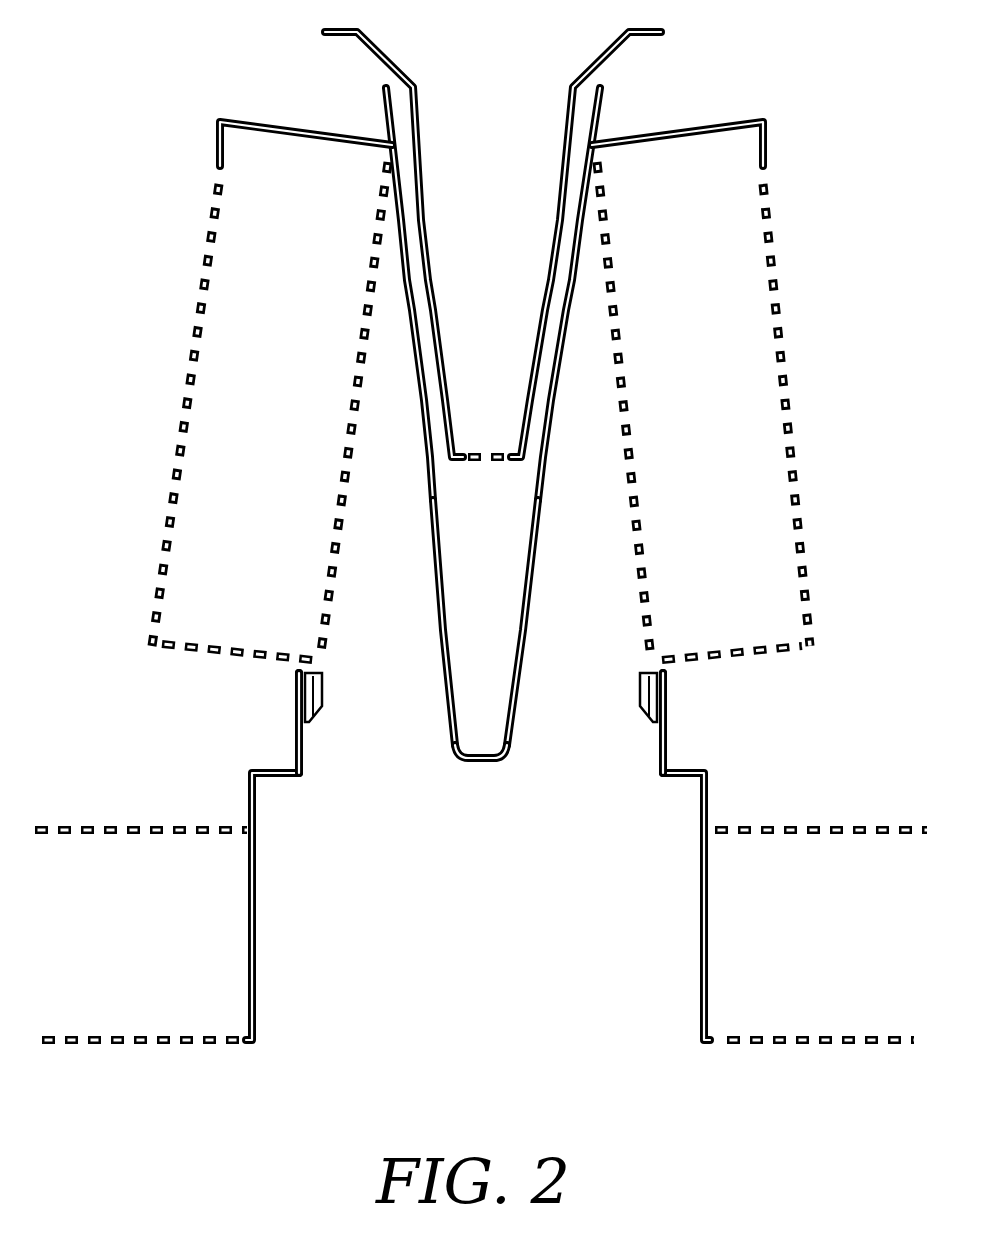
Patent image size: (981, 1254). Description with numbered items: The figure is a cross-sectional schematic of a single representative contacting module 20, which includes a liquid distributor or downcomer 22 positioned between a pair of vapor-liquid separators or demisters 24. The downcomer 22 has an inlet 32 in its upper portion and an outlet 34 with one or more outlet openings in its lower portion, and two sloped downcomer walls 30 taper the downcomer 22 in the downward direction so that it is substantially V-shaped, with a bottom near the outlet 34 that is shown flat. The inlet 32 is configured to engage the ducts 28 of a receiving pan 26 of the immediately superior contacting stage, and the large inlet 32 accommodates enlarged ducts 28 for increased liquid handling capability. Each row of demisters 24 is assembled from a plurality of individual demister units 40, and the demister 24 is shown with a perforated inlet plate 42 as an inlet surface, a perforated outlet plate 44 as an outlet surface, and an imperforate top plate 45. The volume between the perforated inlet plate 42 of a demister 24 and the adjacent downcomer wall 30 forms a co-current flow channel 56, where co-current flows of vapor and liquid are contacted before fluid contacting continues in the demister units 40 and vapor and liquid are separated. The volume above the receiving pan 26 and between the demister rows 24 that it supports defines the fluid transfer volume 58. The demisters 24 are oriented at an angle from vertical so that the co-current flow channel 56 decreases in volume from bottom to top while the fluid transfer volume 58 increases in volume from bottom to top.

The contacting module 20 is at (226, 52).
The downcomer 22 is at (471, 409).
The demister 24 is at (489, 376).
The receiving pan 26 is at (280, 738).
The duct 28 is at (440, 121).
The downcomer wall 30 is at (540, 546).
The inlet 32 is at (391, 78).
The outlet 34 is at (454, 742).
The demister unit 40 is at (292, 412).
The perforated inlet plate 42 is at (357, 404).
The perforated outlet plate 44 is at (200, 304).
The imperforate top plate 45 is at (262, 126).
The co-current flow channel 56 is at (394, 644).
The fluid transfer volume 58 is at (144, 412).